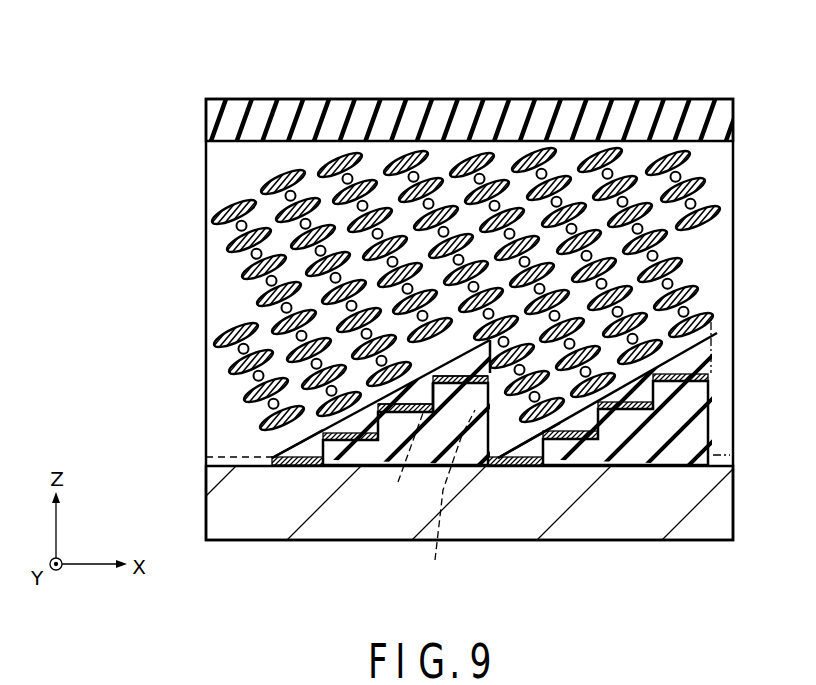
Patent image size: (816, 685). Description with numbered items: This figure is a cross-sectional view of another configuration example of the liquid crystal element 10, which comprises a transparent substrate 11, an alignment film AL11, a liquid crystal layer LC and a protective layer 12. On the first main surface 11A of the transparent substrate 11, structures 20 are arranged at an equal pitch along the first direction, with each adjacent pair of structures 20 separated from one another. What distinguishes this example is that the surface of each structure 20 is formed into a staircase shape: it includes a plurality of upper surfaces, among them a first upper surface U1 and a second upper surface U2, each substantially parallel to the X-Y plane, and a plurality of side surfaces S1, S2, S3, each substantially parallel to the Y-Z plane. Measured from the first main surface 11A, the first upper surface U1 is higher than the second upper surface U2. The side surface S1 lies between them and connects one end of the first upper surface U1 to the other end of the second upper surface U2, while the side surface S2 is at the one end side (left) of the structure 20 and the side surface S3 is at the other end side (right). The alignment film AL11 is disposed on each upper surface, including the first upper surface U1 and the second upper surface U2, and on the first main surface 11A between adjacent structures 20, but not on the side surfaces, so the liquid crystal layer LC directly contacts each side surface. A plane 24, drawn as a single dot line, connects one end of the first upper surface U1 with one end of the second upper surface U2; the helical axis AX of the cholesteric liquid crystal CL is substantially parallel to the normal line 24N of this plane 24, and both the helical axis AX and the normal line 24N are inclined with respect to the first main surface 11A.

The liquid crystal element 10 is at (244, 64).
The protective layer 12 is at (218, 121).
The transparent substrate 11 is at (212, 511).
The first main surface 11A is at (241, 452).
The liquid crystal layer LC is at (216, 190).
The helical axis AX is at (296, 173).
The cholesteric liquid crystal CL is at (312, 182).
The structure 20 is at (325, 440).
The alignment film AL11 is at (286, 472).
The plane 24 is at (320, 432).
The normal line 24N is at (436, 496).
The side surface S1 is at (424, 400).
The side surface S2 is at (303, 449).
The side surface S3 is at (503, 436).
The first upper surface U1 is at (471, 362).
The second upper surface U2 is at (411, 388).